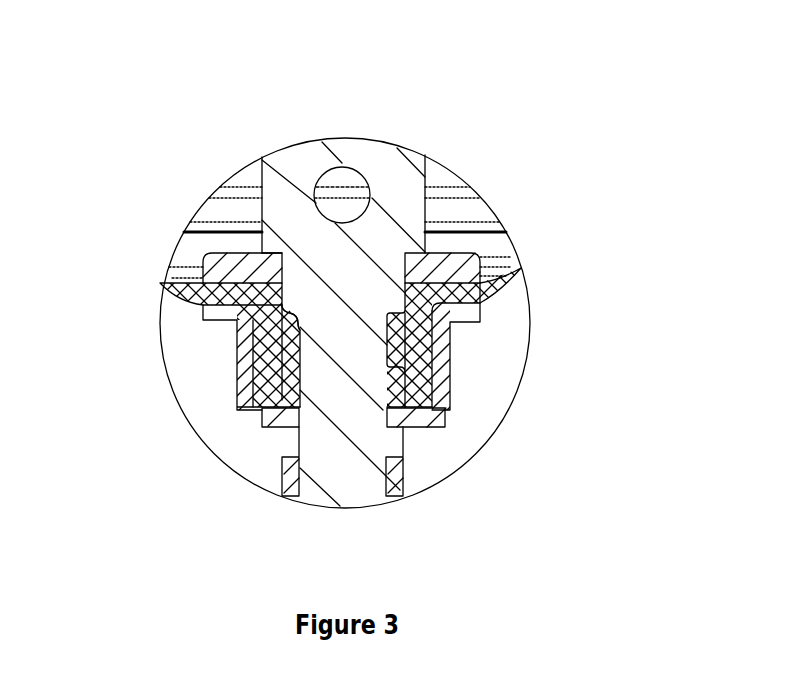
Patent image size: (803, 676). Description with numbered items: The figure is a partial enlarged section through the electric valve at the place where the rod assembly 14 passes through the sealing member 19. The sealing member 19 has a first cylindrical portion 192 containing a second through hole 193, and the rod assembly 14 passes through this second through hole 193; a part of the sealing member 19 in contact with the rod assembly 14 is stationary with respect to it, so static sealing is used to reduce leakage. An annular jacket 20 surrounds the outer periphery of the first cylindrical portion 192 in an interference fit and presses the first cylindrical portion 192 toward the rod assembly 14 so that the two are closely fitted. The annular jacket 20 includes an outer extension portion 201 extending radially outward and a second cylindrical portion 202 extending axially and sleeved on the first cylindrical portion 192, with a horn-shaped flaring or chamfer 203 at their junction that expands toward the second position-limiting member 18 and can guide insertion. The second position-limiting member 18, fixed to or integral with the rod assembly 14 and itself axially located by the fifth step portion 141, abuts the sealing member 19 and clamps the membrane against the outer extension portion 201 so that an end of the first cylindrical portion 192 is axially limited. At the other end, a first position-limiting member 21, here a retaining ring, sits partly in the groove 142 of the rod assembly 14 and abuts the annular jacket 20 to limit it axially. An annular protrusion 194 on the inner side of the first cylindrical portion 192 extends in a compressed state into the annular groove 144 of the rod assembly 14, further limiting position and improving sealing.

The rod assembly 14 is at (410, 187).
The fifth step portion 141 is at (262, 252).
The groove 142 is at (298, 432).
The annular groove 144 is at (300, 318).
The second position-limiting member 18 is at (468, 270).
The sealing member 19 is at (498, 292).
The first cylindrical portion 192 is at (292, 352).
The second through hole 193 is at (268, 312).
The annular protrusion 194 is at (293, 328).
The annular jacket 20 is at (440, 358).
The outer extension portion 201 is at (462, 313).
The second cylindrical portion 202 is at (440, 380).
The horn-shaped flaring or chamfer 203 is at (440, 326).
The first position-limiting member 21 is at (445, 423).